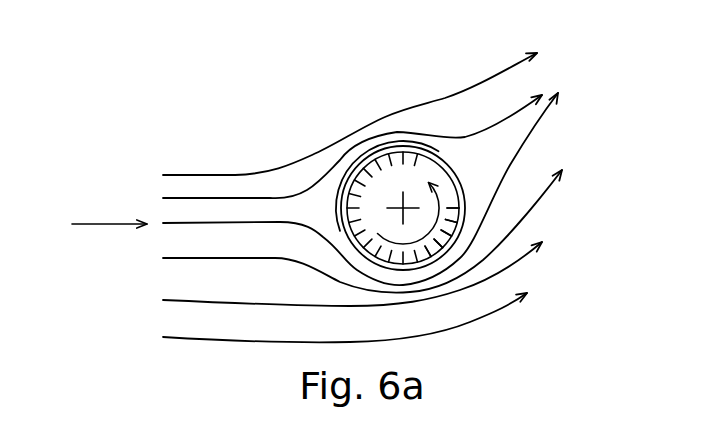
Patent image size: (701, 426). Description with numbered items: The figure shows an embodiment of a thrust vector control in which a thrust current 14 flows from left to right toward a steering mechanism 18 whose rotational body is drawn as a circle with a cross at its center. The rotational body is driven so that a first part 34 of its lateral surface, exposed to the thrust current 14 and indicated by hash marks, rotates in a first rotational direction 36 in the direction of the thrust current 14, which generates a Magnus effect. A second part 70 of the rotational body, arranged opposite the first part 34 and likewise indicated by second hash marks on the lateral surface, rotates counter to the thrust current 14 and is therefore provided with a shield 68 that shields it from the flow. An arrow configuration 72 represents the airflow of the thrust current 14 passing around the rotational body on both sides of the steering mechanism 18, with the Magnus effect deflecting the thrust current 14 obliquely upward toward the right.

The thrust current 14 is at (110, 222).
The arrow configuration 72 is at (196, 175).
The steering mechanism 18 is at (433, 139).
The shield 68 is at (363, 154).
The second part 70 is at (394, 153).
The first rotational direction 36 is at (442, 200).
The first part 34 is at (447, 229).